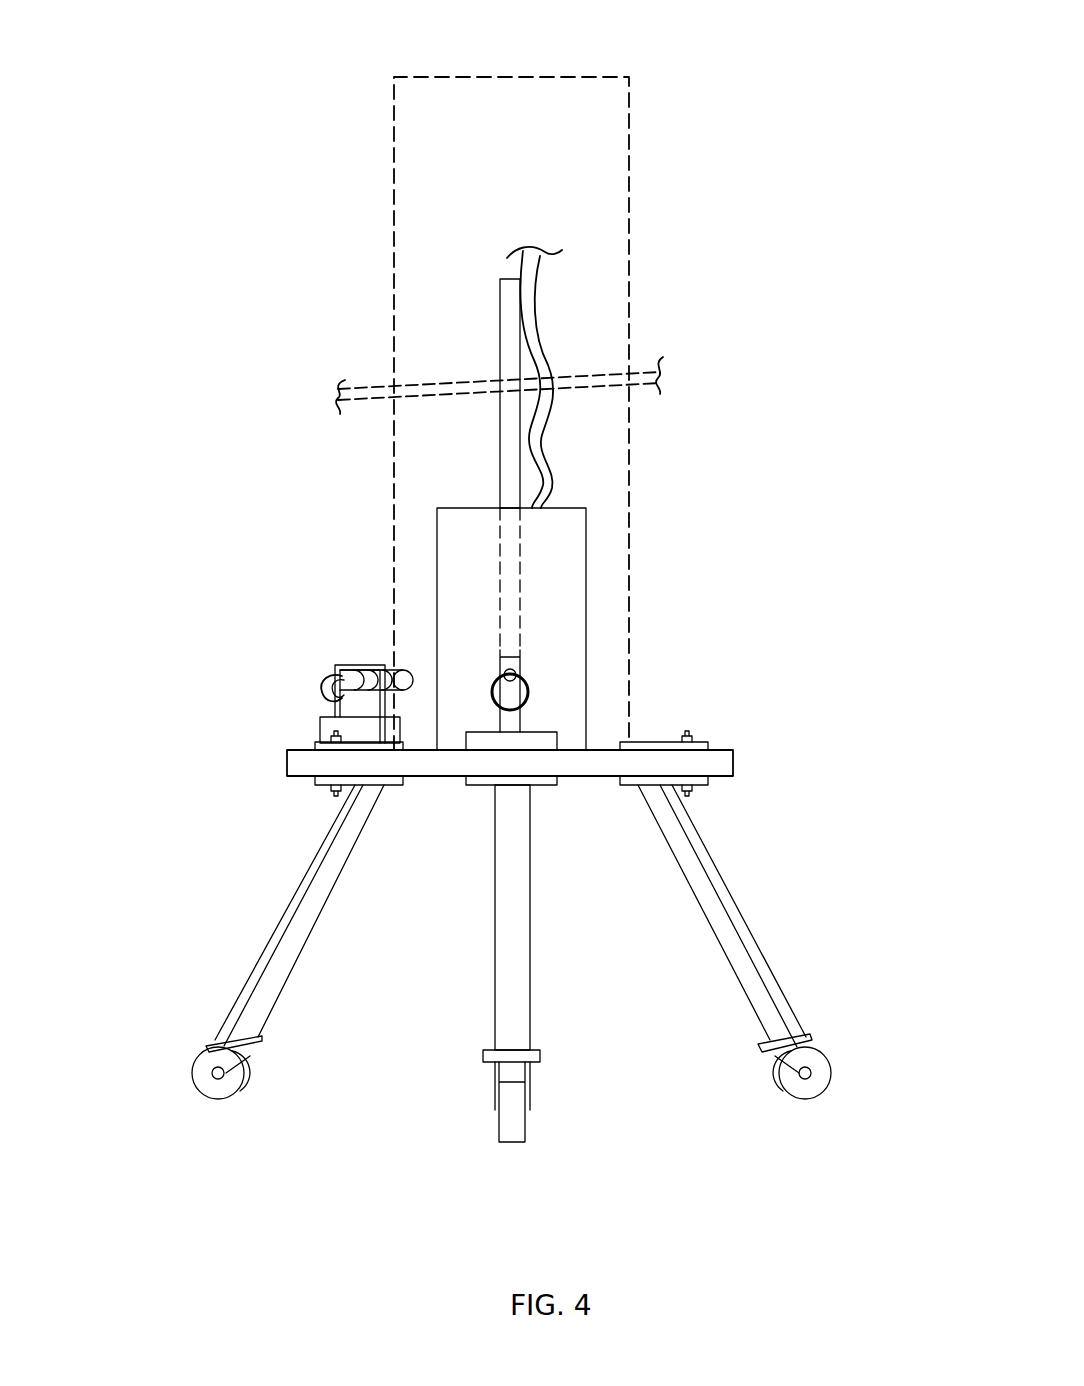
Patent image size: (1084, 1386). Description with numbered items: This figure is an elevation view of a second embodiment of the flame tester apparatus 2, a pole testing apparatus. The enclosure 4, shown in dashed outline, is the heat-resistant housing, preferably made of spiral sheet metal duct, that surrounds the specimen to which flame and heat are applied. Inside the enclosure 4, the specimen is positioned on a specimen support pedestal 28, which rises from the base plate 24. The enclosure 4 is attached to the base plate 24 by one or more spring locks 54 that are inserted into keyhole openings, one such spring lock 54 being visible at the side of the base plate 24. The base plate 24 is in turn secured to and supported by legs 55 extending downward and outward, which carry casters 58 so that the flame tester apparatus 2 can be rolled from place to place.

The flame tester apparatus 2 is at (312, 48).
The enclosure 4 is at (424, 178).
The base plate 24 is at (708, 763).
The specimen support pedestal 28 is at (474, 561).
The spring lock 54 is at (330, 685).
The legs 55 is at (322, 870).
The casters 58 is at (508, 1110).